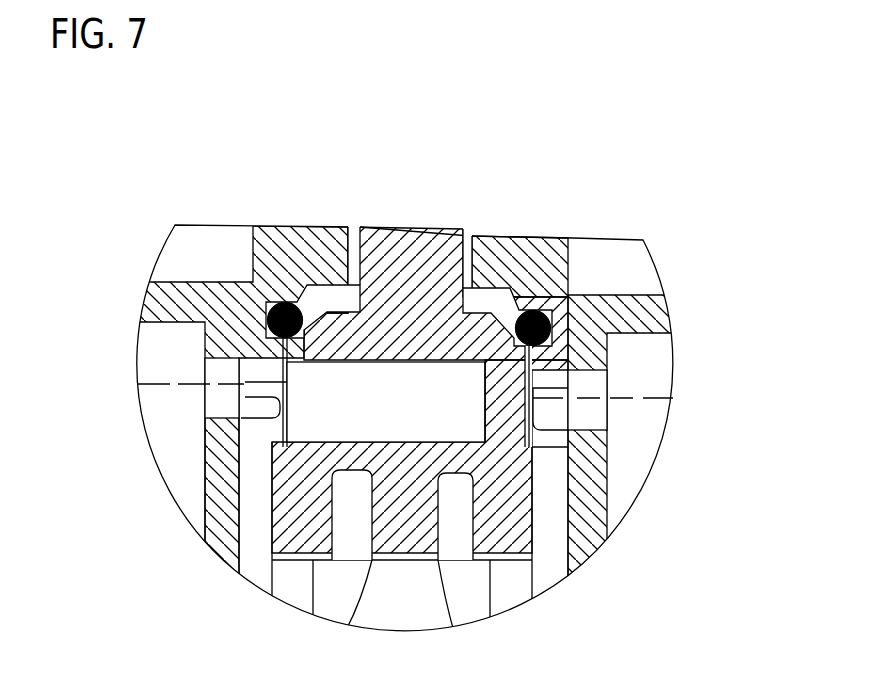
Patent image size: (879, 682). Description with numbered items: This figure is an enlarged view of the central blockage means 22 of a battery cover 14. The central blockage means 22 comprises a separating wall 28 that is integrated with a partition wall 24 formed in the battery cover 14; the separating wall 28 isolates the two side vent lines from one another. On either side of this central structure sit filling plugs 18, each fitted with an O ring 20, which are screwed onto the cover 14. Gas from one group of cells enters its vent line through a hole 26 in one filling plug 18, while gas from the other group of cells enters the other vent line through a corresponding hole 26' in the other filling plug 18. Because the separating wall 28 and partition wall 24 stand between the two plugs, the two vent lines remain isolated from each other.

The battery cover 14 is at (448, 235).
The filling plugs 18 is at (290, 227).
The O rings 20 is at (272, 304).
The central blockage means 22 is at (518, 442).
The partition wall 24 is at (413, 348).
The hole 26 is at (152, 373).
The hole 26' is at (662, 429).
The separating wall 28 is at (499, 407).